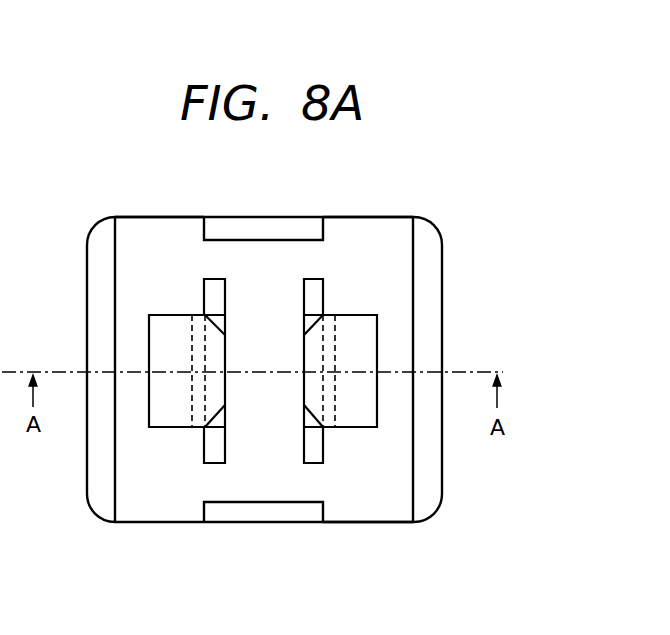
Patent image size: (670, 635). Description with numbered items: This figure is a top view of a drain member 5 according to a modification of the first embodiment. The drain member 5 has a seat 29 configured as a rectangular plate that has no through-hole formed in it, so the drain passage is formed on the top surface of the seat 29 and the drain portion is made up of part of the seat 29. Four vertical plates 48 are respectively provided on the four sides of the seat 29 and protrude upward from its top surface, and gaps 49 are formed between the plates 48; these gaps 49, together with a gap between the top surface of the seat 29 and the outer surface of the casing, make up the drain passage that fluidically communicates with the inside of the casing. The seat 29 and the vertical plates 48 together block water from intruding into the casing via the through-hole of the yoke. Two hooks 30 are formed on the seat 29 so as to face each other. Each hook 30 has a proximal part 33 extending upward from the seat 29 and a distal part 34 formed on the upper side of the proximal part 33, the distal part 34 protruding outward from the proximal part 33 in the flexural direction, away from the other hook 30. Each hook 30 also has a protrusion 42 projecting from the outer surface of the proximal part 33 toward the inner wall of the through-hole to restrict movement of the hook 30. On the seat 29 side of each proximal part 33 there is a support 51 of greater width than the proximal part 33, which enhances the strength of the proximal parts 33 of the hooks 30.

The drain member 5 is at (392, 198).
The seat 29 is at (362, 233).
The hooks 30 is at (300, 298).
The proximal part 33 is at (210, 337).
The distal part 34 is at (158, 352).
The protrusion 42 is at (192, 398).
The vertical plates 48 is at (291, 230).
The gaps 49 is at (358, 508).
The support 51 is at (212, 292).